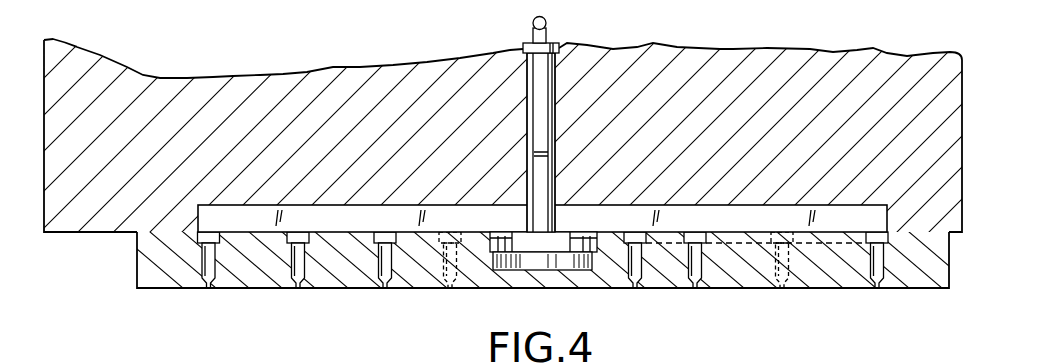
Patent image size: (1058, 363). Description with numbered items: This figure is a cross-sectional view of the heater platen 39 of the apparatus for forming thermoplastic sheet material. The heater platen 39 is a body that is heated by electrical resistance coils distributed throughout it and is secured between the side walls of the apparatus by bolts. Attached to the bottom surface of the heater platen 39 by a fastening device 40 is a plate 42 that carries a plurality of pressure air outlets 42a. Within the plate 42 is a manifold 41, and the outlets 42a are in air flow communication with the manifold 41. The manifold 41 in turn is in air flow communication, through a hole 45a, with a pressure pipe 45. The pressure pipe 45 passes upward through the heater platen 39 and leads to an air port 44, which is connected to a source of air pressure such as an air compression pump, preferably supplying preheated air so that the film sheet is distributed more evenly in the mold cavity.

The heater platen 39 is at (270, 85).
The fastening device 40 is at (528, 240).
The manifold 41 is at (353, 222).
The plate 42 is at (663, 292).
The pressure air outlets 42a is at (200, 291).
The air port 44 is at (533, 22).
The pressure pipe 45 is at (542, 78).
The hole 45a is at (548, 146).